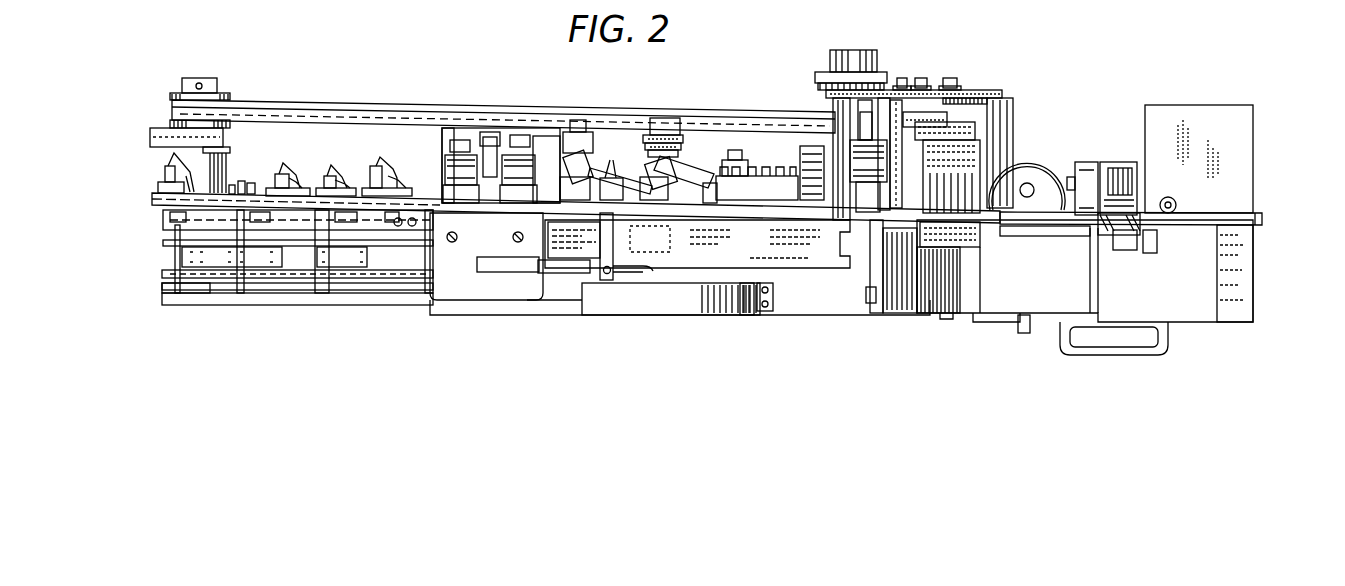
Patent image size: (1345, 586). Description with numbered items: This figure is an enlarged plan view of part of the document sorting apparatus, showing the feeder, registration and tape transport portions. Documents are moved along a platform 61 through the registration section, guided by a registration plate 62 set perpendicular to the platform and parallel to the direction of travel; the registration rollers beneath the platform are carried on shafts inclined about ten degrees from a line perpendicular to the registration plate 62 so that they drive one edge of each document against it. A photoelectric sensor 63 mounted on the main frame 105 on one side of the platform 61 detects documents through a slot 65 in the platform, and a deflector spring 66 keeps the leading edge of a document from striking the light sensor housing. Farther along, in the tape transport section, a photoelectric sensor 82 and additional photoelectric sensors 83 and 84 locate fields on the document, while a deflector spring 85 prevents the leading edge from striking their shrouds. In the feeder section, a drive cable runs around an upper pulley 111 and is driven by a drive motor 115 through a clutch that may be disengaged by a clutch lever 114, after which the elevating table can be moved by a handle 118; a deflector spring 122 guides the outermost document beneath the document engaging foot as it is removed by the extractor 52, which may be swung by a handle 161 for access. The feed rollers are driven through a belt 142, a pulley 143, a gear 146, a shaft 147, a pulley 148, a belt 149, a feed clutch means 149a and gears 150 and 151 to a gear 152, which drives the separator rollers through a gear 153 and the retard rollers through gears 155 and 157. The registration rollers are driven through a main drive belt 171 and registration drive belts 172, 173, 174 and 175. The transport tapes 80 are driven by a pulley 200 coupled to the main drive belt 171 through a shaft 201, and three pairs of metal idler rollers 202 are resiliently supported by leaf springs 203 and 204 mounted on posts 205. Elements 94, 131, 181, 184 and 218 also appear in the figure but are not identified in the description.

The extractor 52 is at (1018, 302).
The platform 61 is at (822, 320).
The registration plate 62 is at (846, 238).
The photoelectric sensor 63 is at (607, 286).
The slot 65 is at (645, 272).
The deflector spring 66 is at (660, 302).
The transport tapes 80 is at (168, 235).
The photoelectric sensor 82 is at (370, 186).
The photoelectric sensor 83 is at (326, 184).
The photoelectric sensor 84 is at (278, 184).
The deflector spring 85 is at (255, 210).
The tool holder 94 is at (160, 187).
The main frame 105 is at (1264, 221).
The upper pulley 111 is at (1128, 152).
The clutch lever 114 is at (1098, 335).
The drive motor 115 is at (1255, 139).
The handle 118 is at (1130, 357).
The deflector spring 122 is at (1130, 258).
The support 131 is at (1082, 142).
The belt 142 is at (897, 80).
The pulley 143 is at (830, 74).
The gear 146 is at (880, 182).
The shaft 147 is at (882, 184).
The pulley 148 is at (852, 152).
The belt 149 is at (980, 150).
The feed clutch means 149a is at (1027, 181).
The gear 150 is at (972, 130).
The gear 151 is at (990, 108).
The gear 152 is at (930, 82).
The gear 153 is at (958, 86).
The gear 155 is at (908, 82).
The gear 157 is at (988, 96).
The handle 161 is at (1034, 333).
The main drive belt 171 is at (522, 104).
The registration drive belt 172 is at (655, 118).
The registration drive belt 173 is at (745, 160).
The registration drive belt 174 is at (697, 167).
The registration drive belt 175 is at (622, 186).
The roller assembly 181 is at (444, 178).
The block 184 is at (505, 276).
The pulley 200 is at (168, 292).
The shaft 201 is at (200, 78).
The idler rollers 202 is at (150, 276).
The leaf spring 203 is at (190, 292).
The leaf spring 204 is at (340, 268).
The posts 205 is at (250, 268).
The plate 218 is at (168, 148).